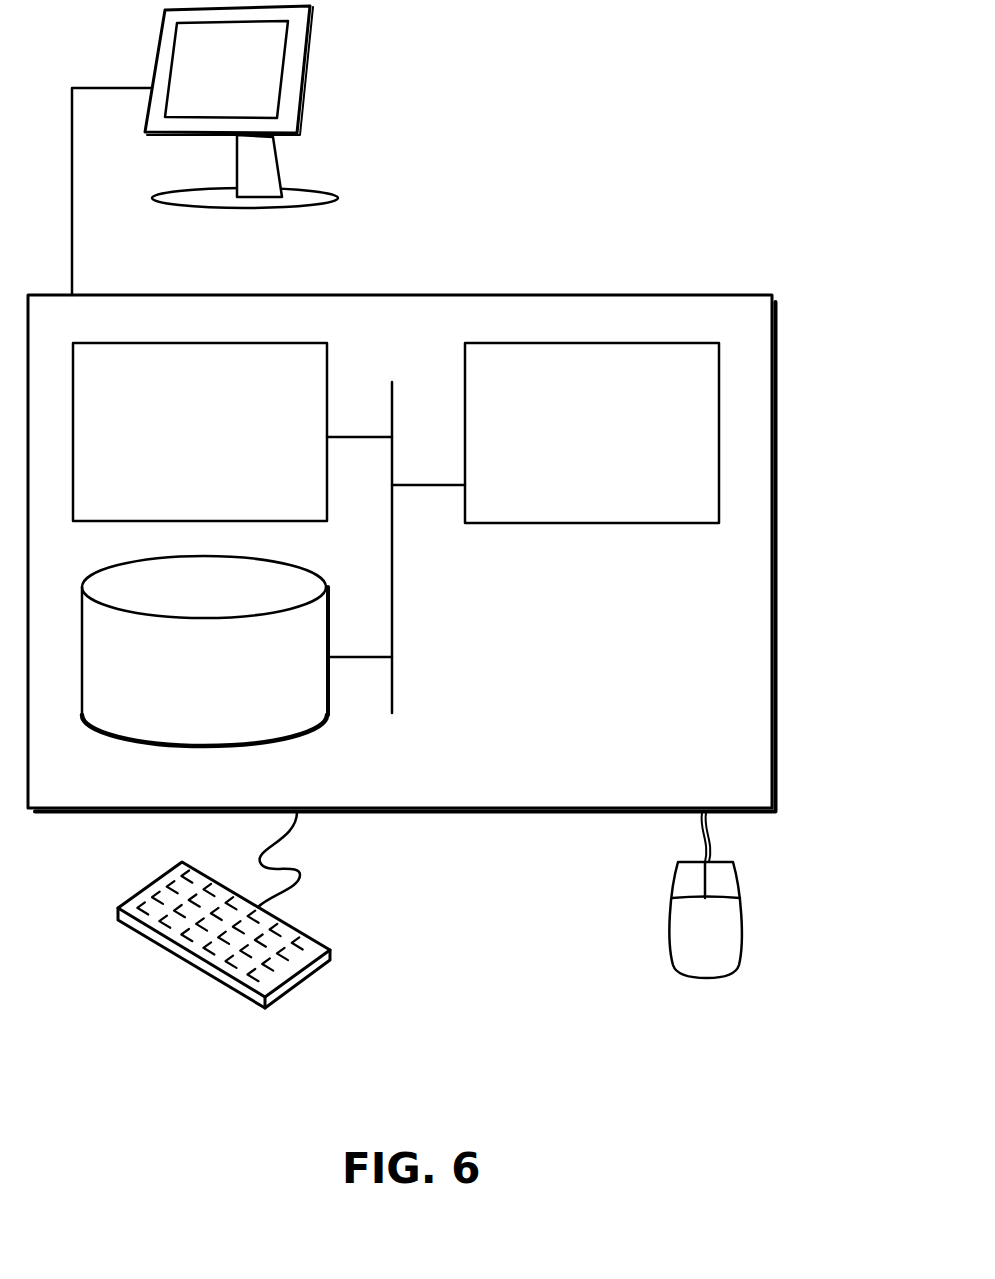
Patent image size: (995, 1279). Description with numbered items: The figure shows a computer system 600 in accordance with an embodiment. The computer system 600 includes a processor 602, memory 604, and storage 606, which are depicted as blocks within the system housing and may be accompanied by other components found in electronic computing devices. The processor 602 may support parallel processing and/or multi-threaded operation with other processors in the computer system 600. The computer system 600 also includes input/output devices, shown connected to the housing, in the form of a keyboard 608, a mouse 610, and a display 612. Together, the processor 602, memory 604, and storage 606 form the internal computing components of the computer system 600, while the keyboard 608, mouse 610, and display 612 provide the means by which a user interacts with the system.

The computer system 600 is at (452, 258).
The processor 602 is at (573, 446).
The memory 604 is at (176, 444).
The storage 606 is at (184, 685).
The keyboard 608 is at (140, 933).
The mouse 610 is at (682, 946).
The display 612 is at (205, 150).